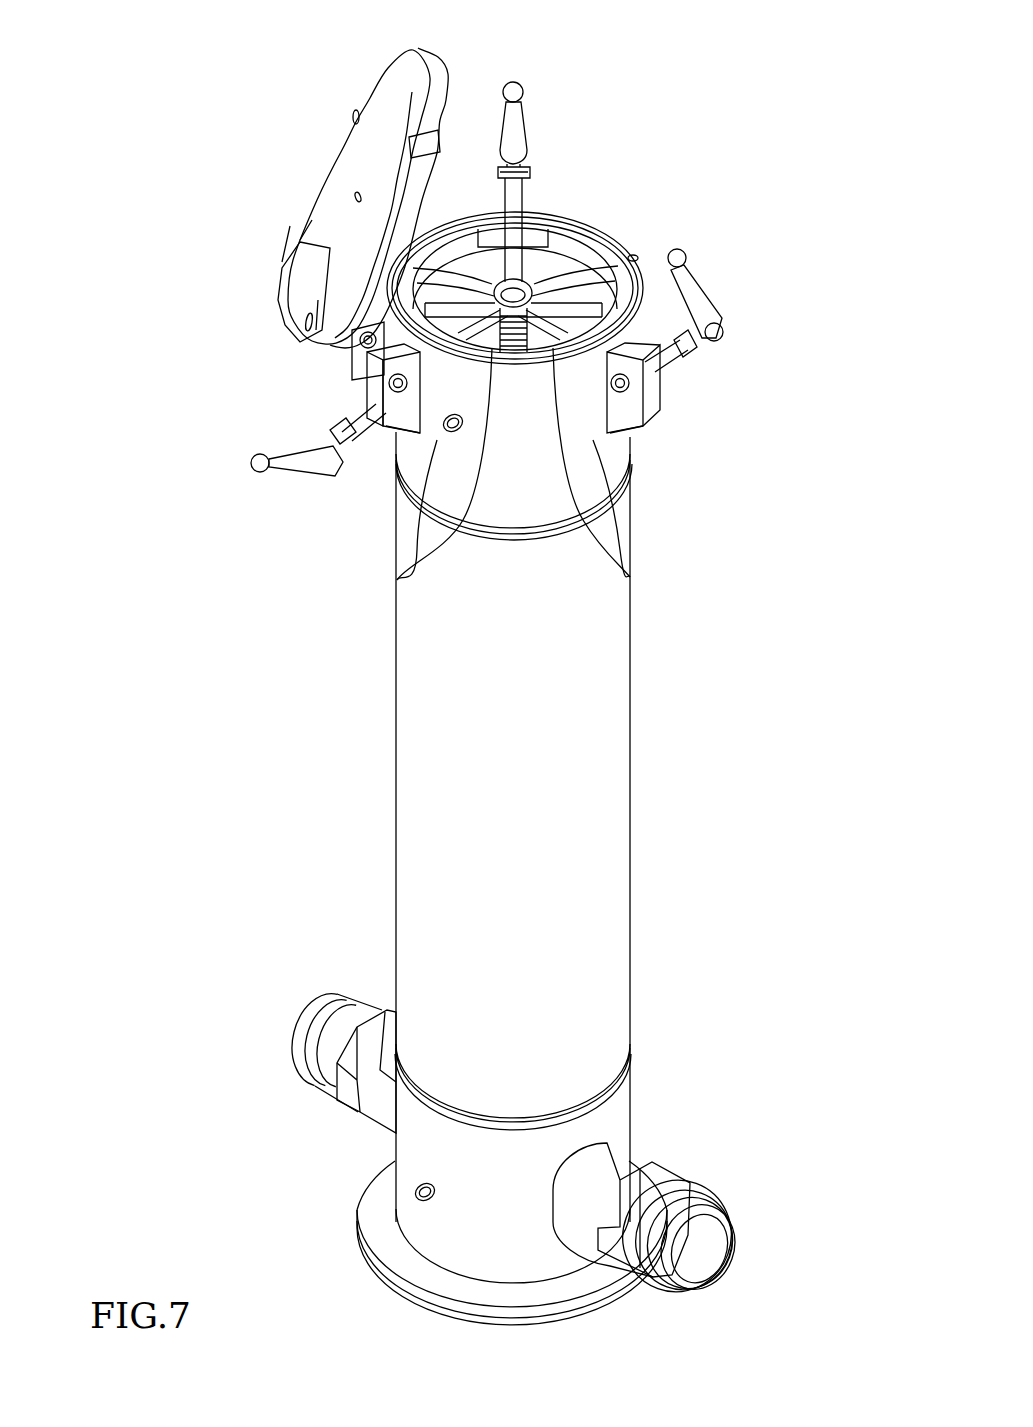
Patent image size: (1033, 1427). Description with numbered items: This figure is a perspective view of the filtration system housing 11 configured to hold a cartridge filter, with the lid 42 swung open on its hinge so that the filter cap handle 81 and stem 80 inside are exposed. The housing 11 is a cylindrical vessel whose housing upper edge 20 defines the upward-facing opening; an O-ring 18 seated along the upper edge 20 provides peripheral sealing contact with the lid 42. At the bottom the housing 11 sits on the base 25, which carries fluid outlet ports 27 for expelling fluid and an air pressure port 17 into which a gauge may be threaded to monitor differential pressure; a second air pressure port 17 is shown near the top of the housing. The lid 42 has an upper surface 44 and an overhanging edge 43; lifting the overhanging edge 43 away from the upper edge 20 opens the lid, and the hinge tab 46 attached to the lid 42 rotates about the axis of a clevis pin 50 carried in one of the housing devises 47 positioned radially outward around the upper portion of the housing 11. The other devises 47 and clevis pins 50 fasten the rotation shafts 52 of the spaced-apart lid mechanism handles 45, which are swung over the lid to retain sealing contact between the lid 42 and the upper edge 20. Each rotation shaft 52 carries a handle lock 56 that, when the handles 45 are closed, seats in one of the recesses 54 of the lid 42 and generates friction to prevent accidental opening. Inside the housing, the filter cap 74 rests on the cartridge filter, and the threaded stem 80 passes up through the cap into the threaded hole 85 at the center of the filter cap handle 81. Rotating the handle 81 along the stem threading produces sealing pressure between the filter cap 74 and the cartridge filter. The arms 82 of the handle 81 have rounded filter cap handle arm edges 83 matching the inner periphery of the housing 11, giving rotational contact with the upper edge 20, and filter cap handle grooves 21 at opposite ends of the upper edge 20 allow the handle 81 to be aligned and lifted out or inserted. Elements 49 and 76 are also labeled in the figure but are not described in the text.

The filtration system housing 11 is at (615, 912).
The air pressure port 17 is at (448, 433).
The O-ring 18 is at (617, 233).
The housing upper edge 20 is at (465, 243).
The filter cap handle grooves 21 is at (497, 228).
The base 25 is at (380, 1285).
The fluid outlet ports 27 is at (312, 1015).
The lid 42 is at (325, 174).
The overhanging edge 43 is at (432, 55).
The upper surface 44 is at (342, 178).
The lid mechanism handles 45 is at (513, 82).
The hinge tab 46 is at (295, 293).
The housing devises 47 is at (642, 405).
The fasteners 49 is at (360, 380).
The clevis pin 50 is at (398, 412).
The rotation shaft 52 is at (523, 190).
The recesses 54 is at (412, 140).
The handle lock 56 is at (523, 167).
The filter cap 74 is at (622, 566).
The shoulder 76 is at (620, 513).
The stem 80 is at (397, 578).
The filter cap handle 81 is at (530, 280).
The arms 82 is at (457, 300).
The filter cap handle arm edge 83 is at (633, 256).
The threaded hole 85 is at (513, 288).